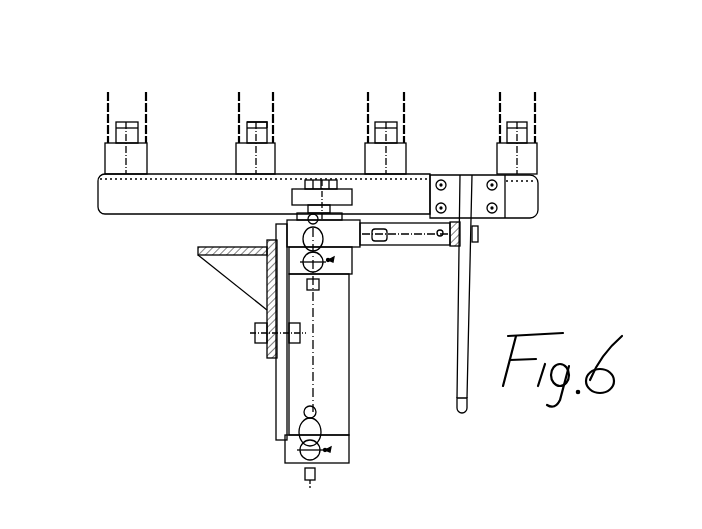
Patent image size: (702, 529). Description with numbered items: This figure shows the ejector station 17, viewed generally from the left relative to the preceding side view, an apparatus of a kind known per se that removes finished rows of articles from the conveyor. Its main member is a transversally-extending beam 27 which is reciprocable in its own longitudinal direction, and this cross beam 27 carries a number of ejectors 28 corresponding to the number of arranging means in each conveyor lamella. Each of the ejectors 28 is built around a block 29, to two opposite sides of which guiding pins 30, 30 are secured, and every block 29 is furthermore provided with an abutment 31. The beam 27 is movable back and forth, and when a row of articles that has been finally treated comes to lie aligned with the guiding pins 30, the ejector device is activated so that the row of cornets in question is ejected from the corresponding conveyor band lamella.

The ejector station 17 is at (213, 70).
The transversally-extending beam 27 is at (140, 194).
The ejectors 28 is at (112, 157).
The block 29 is at (137, 163).
The guiding pins 30 is at (107, 112).
The abutment 31 is at (253, 122).